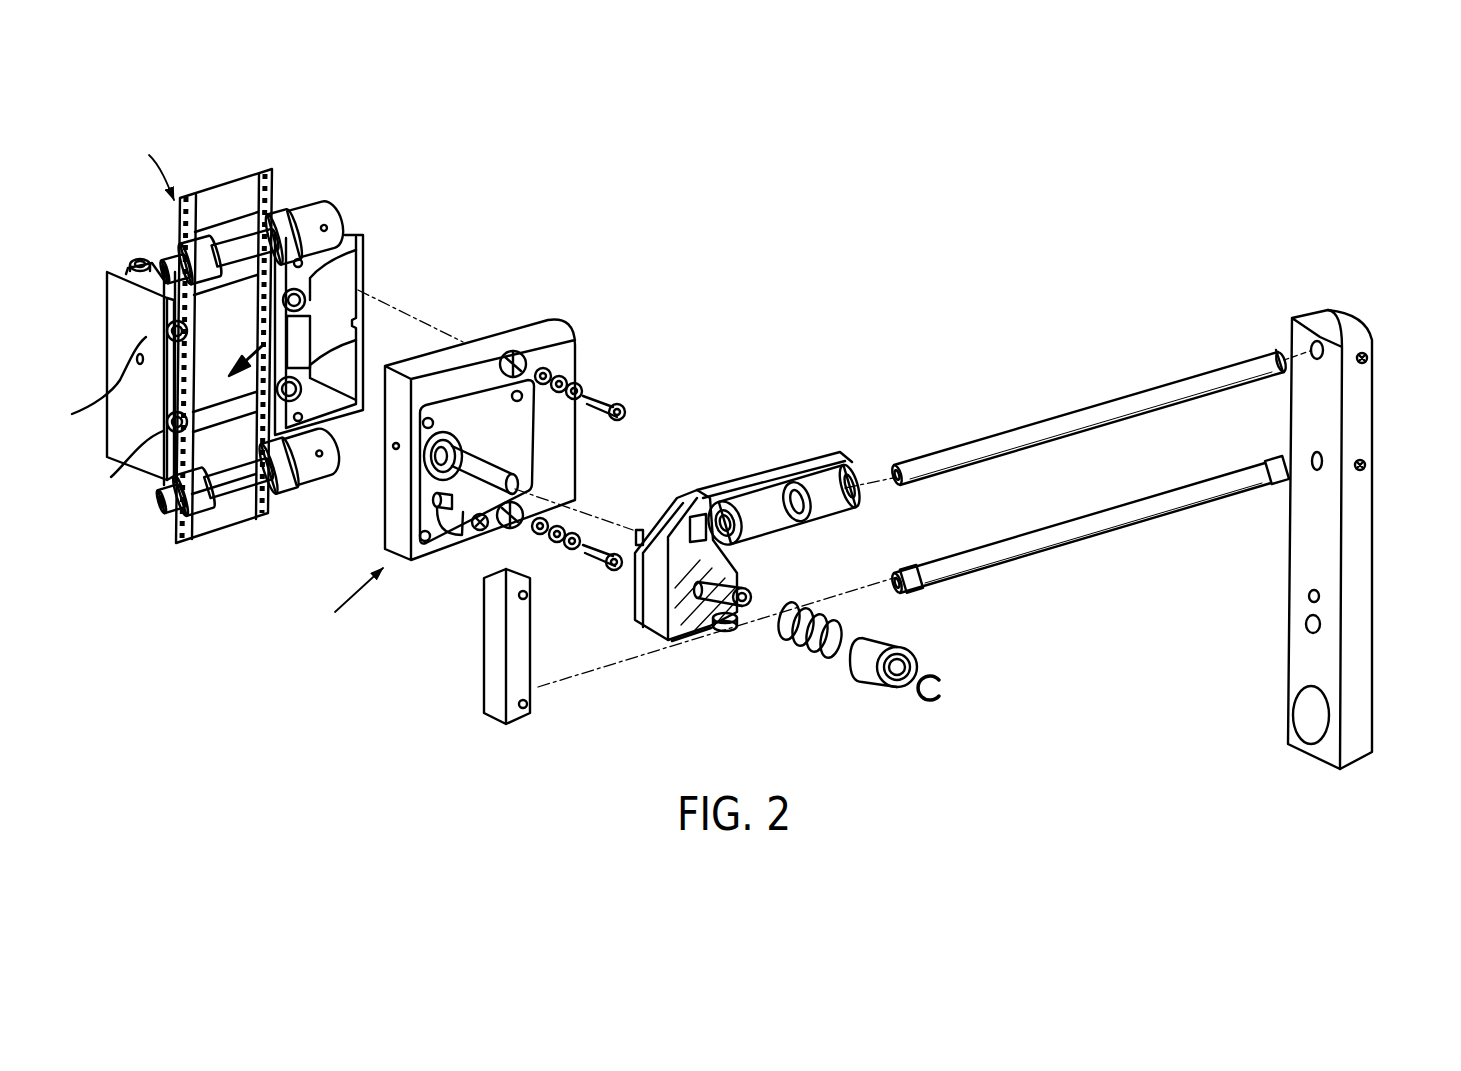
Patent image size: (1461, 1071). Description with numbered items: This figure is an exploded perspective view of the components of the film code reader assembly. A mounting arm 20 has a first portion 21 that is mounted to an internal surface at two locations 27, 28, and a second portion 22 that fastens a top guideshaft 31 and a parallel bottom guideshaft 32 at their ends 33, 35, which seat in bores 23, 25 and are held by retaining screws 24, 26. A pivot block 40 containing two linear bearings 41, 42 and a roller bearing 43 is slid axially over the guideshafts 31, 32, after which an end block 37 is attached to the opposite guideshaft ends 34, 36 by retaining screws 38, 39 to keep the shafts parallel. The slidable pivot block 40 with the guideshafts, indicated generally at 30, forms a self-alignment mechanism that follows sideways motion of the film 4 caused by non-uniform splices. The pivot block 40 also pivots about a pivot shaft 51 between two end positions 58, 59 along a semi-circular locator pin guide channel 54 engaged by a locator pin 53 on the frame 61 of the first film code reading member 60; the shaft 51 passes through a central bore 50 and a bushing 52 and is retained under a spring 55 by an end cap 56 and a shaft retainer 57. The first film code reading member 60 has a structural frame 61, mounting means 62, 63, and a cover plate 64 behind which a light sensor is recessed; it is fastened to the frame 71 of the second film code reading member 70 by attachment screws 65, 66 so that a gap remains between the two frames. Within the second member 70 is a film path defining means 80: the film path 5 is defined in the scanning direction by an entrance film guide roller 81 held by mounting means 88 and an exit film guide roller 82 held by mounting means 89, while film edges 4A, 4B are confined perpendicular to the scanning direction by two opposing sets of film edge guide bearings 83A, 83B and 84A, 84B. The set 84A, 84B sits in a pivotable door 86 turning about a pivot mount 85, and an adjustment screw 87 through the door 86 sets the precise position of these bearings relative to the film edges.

The film 4 is at (207, 352).
The film edge 4A is at (268, 510).
The film edge 4B is at (177, 540).
The film path 5 is at (148, 165).
The mounting arm 20 is at (1385, 534).
The first portion 21 is at (1370, 698).
The second portion 22 is at (1379, 405).
The bore 23 is at (1318, 342).
The retaining screw 24 is at (1365, 355).
The bore 25 is at (1317, 469).
The retaining screw 26 is at (1365, 465).
The mounting location 27 is at (1306, 634).
The mounting location 28 is at (1293, 727).
The self-alignment mechanism 30 is at (912, 450).
The top guideshaft 31 is at (1088, 411).
The bottom guideshaft 32 is at (1089, 548).
The guideshaft end 33 is at (1284, 347).
The guideshaft end 34 is at (903, 484).
The guideshaft end 35 is at (1275, 483).
The guideshaft end 36 is at (903, 592).
The end block 37 is at (495, 724).
The retaining screw 38 is at (519, 595).
The retaining screw 39 is at (527, 705).
The pivot block 40 is at (758, 480).
The linear bearing 41 is at (828, 503).
The linear bearing 42 is at (767, 527).
The roller bearing 43 is at (728, 633).
The central bore 50 is at (660, 580).
The pivot shaft 51 is at (474, 468).
The bushing 52 is at (747, 604).
The locator pin 53 is at (450, 511).
The locator pin guide channel 54 is at (635, 540).
The spring 55 is at (811, 660).
The end cap 56 is at (918, 650).
The shaft retainer 57 is at (933, 690).
The end position 58 is at (693, 634).
The end position 59 is at (700, 505).
The first film code reading member 60 is at (480, 524).
The structural frame 61 is at (553, 323).
The mounting means 62 is at (528, 366).
The mounting means 63 is at (545, 496).
The cover plate 64 is at (471, 403).
The attachment screw 65 is at (599, 394).
The attachment screw 66 is at (594, 561).
The second film code reading member 70 is at (128, 249).
The structural frame 71 is at (358, 235).
The film path defining means 80 is at (300, 336).
The entrance film guide roller 81 is at (282, 204).
The exit film guide roller 82 is at (235, 501).
The film edge guide bearing 83A is at (335, 372).
The film edge guide bearing 83B is at (336, 270).
The film edge guide bearing 84A is at (111, 477).
The film edge guide bearing 84B is at (137, 355).
The pivot mount 85 is at (131, 262).
The pivotable door 86 is at (104, 368).
The adjustment screw 87 is at (74, 413).
The mounting means 88 is at (338, 209).
The mounting means 89 is at (324, 480).